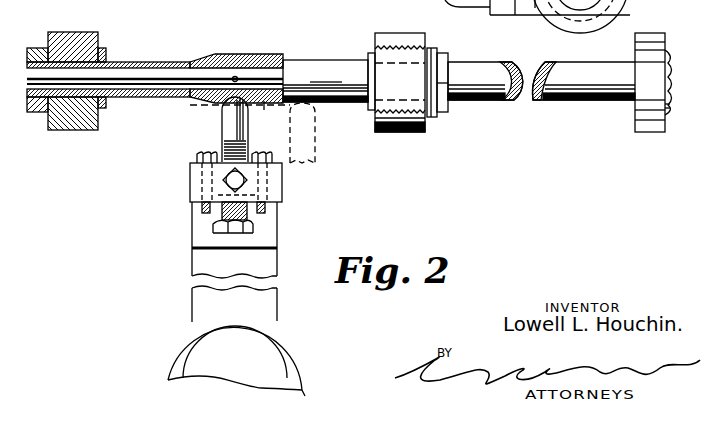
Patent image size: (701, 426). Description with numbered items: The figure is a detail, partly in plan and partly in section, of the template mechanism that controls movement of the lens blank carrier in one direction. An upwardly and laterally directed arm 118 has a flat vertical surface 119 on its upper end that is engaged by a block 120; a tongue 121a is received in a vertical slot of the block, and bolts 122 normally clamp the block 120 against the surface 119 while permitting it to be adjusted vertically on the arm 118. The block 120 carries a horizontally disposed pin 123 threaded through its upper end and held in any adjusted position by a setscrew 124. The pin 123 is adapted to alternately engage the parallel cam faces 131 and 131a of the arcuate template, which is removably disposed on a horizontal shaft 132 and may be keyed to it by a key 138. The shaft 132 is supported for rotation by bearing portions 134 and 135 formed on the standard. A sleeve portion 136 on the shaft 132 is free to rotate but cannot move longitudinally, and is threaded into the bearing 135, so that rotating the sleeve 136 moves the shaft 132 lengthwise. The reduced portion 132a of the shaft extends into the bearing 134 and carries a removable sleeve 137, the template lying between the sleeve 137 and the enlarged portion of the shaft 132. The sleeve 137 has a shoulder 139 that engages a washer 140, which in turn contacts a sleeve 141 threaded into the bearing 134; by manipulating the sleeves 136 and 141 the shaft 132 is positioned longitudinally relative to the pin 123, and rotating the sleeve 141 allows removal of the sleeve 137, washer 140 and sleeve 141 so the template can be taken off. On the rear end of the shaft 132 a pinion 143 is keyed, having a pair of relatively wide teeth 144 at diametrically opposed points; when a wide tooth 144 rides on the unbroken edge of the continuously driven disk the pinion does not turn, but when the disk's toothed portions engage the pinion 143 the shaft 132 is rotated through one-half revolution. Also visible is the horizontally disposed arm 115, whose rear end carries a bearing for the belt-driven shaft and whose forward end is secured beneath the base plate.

The horizontally disposed arm 115 is at (517, 15).
The arm 118 is at (215, 259).
The flat vertical surface 119 is at (201, 207).
The block 120 is at (196, 183).
The tongue 121a is at (270, 213).
The bolts 122 is at (198, 158).
The pin 123 is at (229, 124).
The setscrew 124 is at (244, 180).
The cam face 131 is at (258, 56).
The cam face 131a is at (264, 107).
The shaft 132 is at (336, 73).
The reduced portion of the shaft 132a is at (166, 78).
The bearing portion 134 is at (83, 32).
The bearing portion 135 is at (401, 42).
The sleeve portion 136 is at (443, 108).
The sleeve 137 is at (137, 99).
The key 138 is at (236, 77).
The shoulder 139 is at (106, 63).
The washer 140 is at (103, 50).
The sleeve 141 is at (55, 50).
The pinion 143 is at (650, 112).
The wide teeth 144 is at (652, 81).